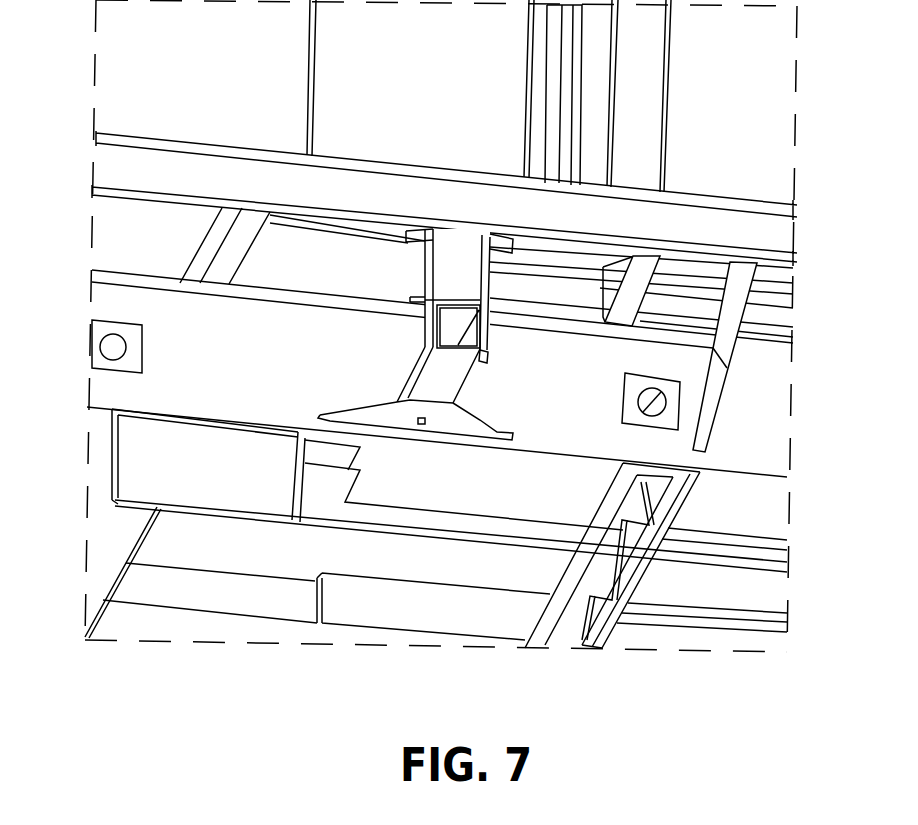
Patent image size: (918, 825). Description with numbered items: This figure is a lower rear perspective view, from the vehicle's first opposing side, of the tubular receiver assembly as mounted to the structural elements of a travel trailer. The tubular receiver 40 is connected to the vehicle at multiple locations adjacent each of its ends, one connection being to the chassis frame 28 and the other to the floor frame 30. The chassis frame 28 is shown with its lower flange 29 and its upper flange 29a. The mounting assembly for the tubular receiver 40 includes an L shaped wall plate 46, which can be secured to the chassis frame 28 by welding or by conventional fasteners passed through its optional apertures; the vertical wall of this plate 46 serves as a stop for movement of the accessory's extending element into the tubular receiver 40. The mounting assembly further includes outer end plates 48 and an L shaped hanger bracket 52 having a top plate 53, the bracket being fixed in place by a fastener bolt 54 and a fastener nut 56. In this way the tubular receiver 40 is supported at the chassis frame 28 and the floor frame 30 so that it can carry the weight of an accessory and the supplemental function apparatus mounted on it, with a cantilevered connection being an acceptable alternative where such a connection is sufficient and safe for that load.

The chassis frame 28 is at (560, 403).
The lower flange 29 is at (105, 413).
The upper flange 29a is at (540, 325).
The floor frame 30 is at (371, 207).
The tubular receiver 40 is at (427, 375).
The L shaped wall plate 46 is at (403, 417).
The outer end plates 48 is at (489, 355).
The L shaped hanger bracket 52 is at (487, 282).
The top plate 53 is at (512, 242).
The fastener bolt 54 is at (452, 302).
The fastener nut 56 is at (423, 300).